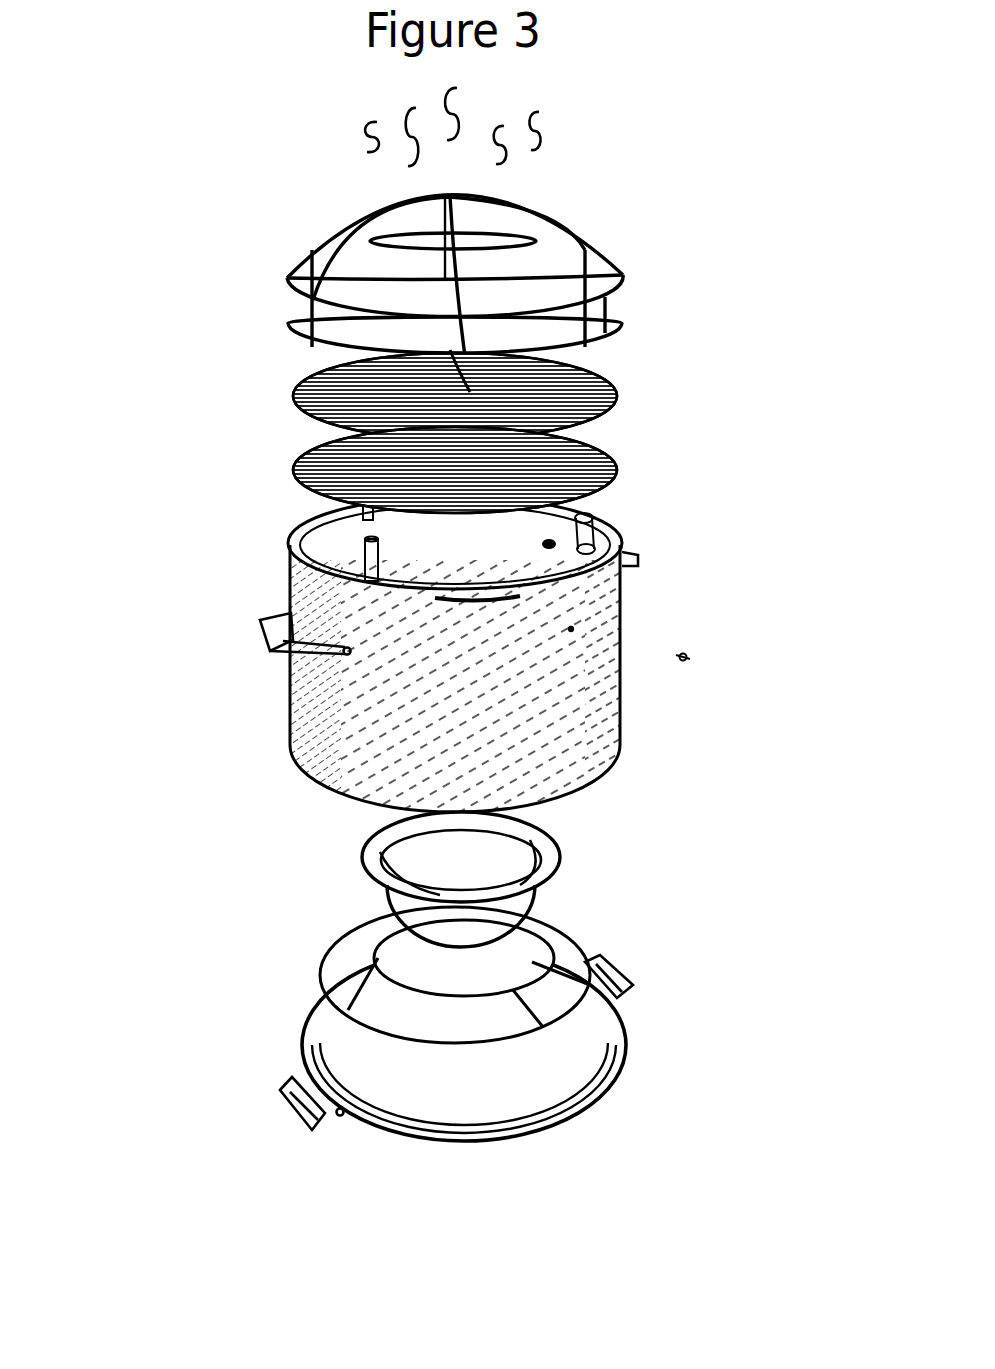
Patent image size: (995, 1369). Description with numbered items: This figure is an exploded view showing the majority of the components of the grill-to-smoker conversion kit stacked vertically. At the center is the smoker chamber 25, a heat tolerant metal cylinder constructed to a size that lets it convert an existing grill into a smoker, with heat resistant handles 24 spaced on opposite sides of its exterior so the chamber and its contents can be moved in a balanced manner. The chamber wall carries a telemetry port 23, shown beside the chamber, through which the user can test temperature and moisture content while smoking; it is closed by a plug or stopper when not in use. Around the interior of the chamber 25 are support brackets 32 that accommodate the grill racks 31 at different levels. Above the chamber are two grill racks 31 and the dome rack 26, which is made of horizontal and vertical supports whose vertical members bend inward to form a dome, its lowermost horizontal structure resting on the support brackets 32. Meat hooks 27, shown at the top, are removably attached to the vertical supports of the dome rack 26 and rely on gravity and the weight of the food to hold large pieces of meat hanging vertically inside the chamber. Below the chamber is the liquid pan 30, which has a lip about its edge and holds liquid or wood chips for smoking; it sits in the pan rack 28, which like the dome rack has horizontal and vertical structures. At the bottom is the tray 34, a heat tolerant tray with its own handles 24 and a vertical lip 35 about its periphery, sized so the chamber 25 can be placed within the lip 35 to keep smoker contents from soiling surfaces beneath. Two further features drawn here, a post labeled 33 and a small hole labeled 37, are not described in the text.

The telemetry port 23 is at (690, 652).
The heat resistant handles 24 is at (638, 562).
The smoker chamber 25 is at (295, 712).
The dome rack 26 is at (568, 240).
The meat hooks 27 is at (537, 112).
The pan rack 28 is at (328, 976).
The liquid pan 30 is at (365, 855).
The grill racks 31 is at (300, 460).
The support brackets 32 is at (367, 513).
The post 33 is at (287, 557).
The tray 34 is at (590, 1047).
The lip 35 is at (473, 1132).
The hole 37 is at (571, 629).